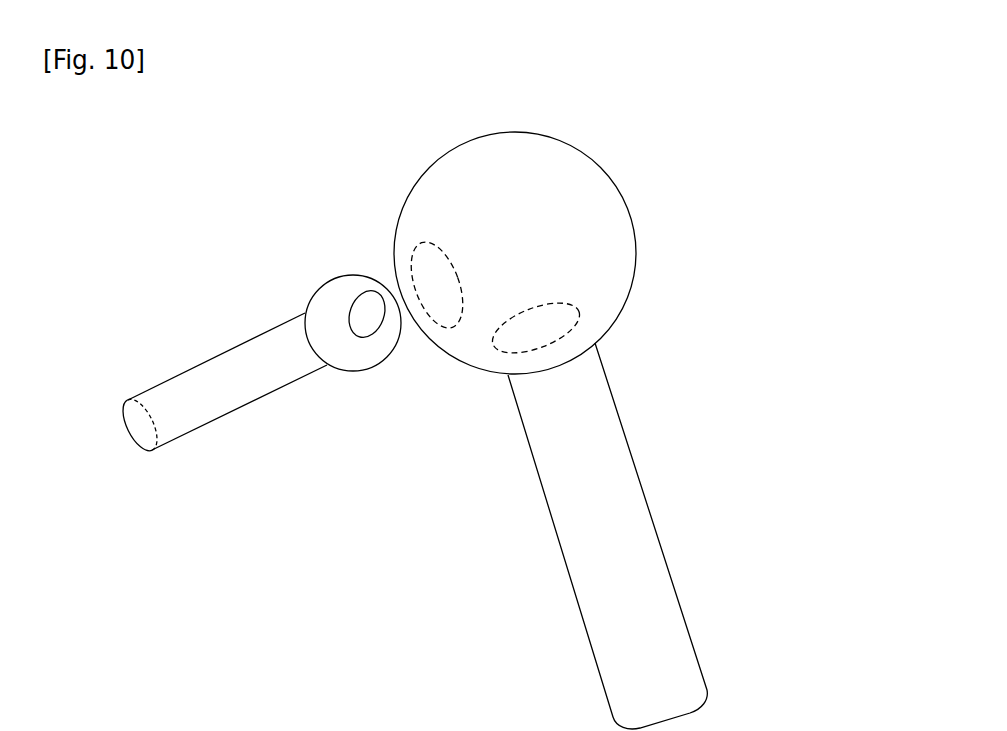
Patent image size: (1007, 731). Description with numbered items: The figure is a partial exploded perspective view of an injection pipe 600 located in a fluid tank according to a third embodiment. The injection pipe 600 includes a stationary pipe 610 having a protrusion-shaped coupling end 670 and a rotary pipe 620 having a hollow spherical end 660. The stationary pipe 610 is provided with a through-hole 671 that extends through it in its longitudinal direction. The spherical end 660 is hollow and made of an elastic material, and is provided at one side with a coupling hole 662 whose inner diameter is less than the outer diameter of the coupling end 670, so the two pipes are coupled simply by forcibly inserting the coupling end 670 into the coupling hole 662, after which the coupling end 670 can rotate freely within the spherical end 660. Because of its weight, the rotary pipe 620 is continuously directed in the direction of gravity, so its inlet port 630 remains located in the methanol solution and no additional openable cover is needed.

The injection pipe 600 is at (95, 110).
The stationary pipe 610 is at (212, 357).
The rotary pipe 620 is at (710, 316).
The inlet port 630 is at (633, 462).
The hollow spherical end 660 is at (617, 185).
The coupling hole 662 is at (435, 253).
The coupling end 670 is at (327, 280).
The through-hole 671 is at (380, 320).